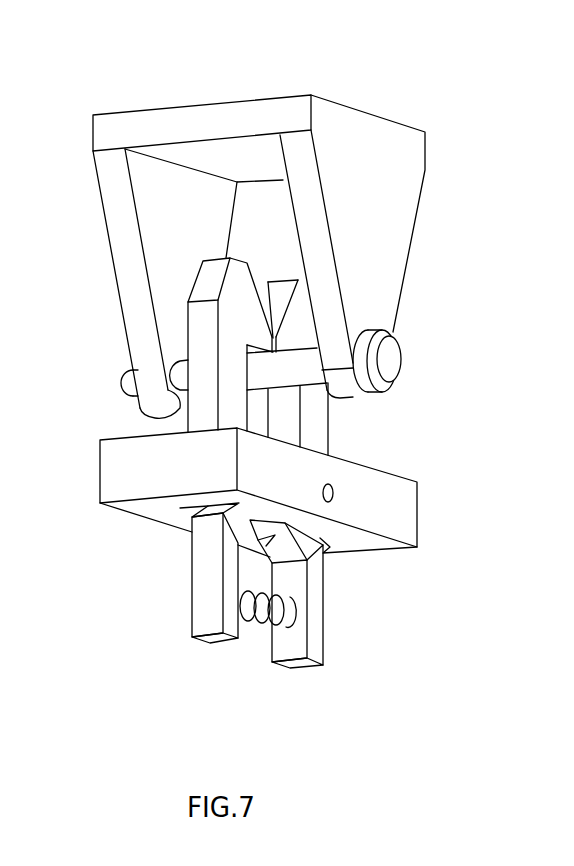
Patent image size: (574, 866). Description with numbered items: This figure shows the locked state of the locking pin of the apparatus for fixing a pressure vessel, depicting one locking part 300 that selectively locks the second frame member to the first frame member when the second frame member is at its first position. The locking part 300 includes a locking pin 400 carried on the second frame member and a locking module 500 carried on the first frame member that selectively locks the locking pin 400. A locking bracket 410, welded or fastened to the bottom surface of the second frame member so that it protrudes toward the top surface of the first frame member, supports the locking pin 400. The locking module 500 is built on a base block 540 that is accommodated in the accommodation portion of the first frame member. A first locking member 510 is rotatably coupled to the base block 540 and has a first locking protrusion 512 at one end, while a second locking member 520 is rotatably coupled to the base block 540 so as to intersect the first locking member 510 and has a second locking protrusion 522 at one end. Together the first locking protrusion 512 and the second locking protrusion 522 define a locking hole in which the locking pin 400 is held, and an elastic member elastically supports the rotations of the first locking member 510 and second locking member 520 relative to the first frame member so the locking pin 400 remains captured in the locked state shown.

The locking part 300 is at (98, 90).
The locking pin 400 is at (312, 390).
The locking bracket 410 is at (383, 215).
The locking module 500 is at (158, 539).
The first locking member 510 is at (188, 392).
The first locking protrusion 512 is at (257, 332).
The second locking member 520 is at (315, 435).
The second locking protrusion 522 is at (295, 328).
The base block 540 is at (407, 515).